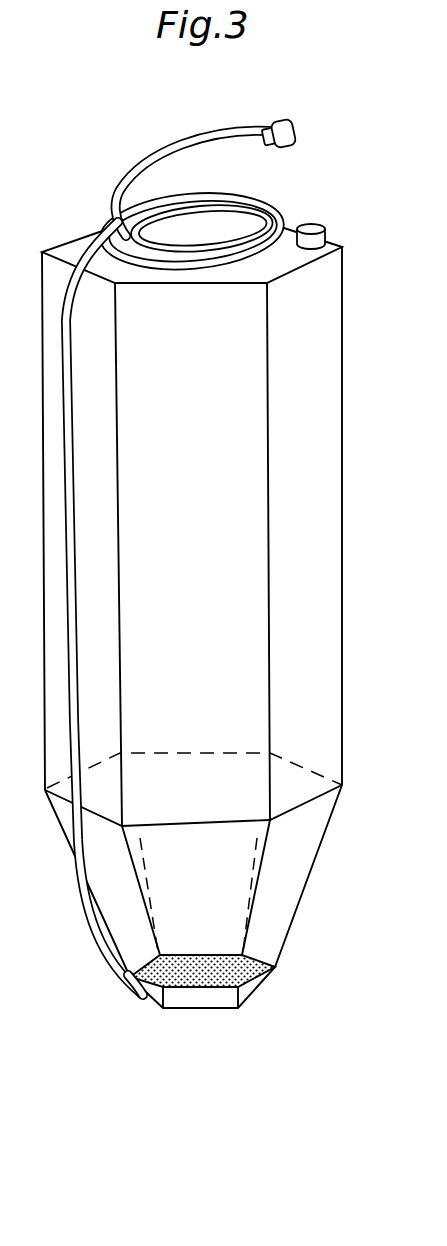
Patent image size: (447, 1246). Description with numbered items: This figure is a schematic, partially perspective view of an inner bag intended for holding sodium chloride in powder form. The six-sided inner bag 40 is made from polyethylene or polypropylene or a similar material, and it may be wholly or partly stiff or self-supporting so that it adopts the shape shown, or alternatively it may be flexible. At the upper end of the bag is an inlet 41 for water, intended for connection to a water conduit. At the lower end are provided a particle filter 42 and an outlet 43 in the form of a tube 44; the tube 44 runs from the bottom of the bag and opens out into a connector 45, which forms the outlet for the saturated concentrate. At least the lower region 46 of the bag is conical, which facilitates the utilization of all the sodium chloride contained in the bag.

The inner bag 40 is at (330, 549).
The inlet 41 is at (308, 225).
The particle filter 42 is at (258, 976).
The outlet 43 is at (132, 997).
The tube 44 is at (81, 907).
The connector 45 is at (295, 133).
The lower region 46 is at (277, 908).